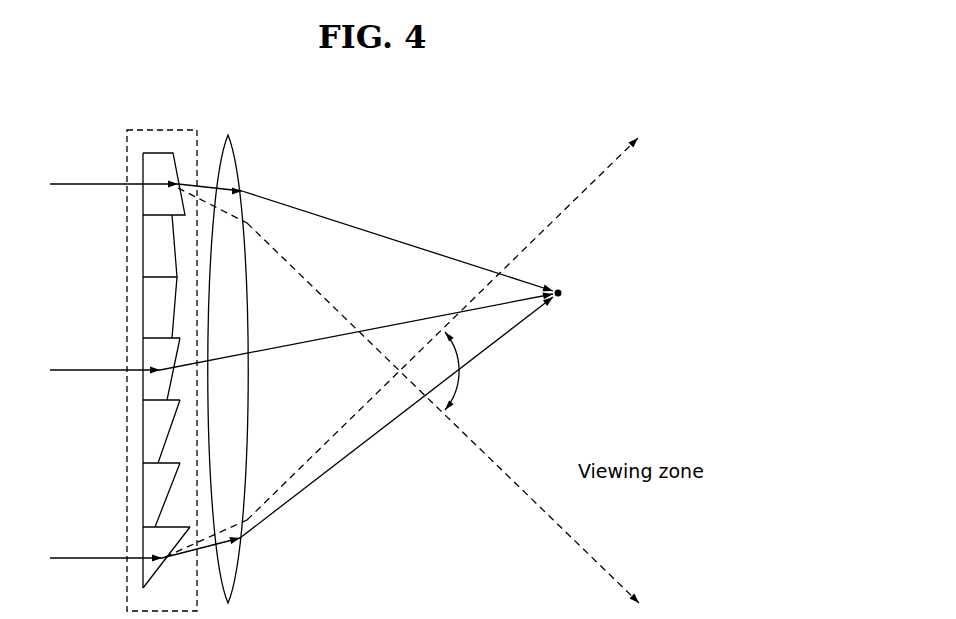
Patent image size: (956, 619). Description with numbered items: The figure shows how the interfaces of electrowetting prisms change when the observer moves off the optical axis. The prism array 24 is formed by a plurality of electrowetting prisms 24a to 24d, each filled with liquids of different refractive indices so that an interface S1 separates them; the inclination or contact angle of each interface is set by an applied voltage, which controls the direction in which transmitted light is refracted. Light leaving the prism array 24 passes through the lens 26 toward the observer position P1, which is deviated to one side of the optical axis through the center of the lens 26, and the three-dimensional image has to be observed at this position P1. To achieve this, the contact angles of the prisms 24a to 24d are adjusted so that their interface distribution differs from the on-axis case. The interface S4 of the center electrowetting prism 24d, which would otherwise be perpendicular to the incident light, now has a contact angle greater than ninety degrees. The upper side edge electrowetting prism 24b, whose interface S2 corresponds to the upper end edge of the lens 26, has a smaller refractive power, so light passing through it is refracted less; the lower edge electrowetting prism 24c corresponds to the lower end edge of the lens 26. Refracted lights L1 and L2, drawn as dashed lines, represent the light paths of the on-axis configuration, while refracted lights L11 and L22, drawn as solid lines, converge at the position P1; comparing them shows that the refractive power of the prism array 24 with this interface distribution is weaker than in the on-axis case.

The prism array 24 is at (114, 136).
The electrowetting prism 24a is at (150, 243).
The upper side edge electrowetting prism 24b is at (152, 198).
The lower edge electrowetting prism 24c is at (150, 543).
The center electrowetting prism 24d is at (150, 385).
The lens 26 is at (229, 150).
The interface S1 is at (190, 270).
The interface of upper edge prism S2 is at (181, 162).
The interface of center prism S4 is at (182, 383).
The refracted light L1 is at (330, 300).
The refracted light L11 is at (318, 217).
The refracted light L2 is at (292, 478).
The refracted light L22 is at (350, 453).
The observer position P1 is at (568, 289).